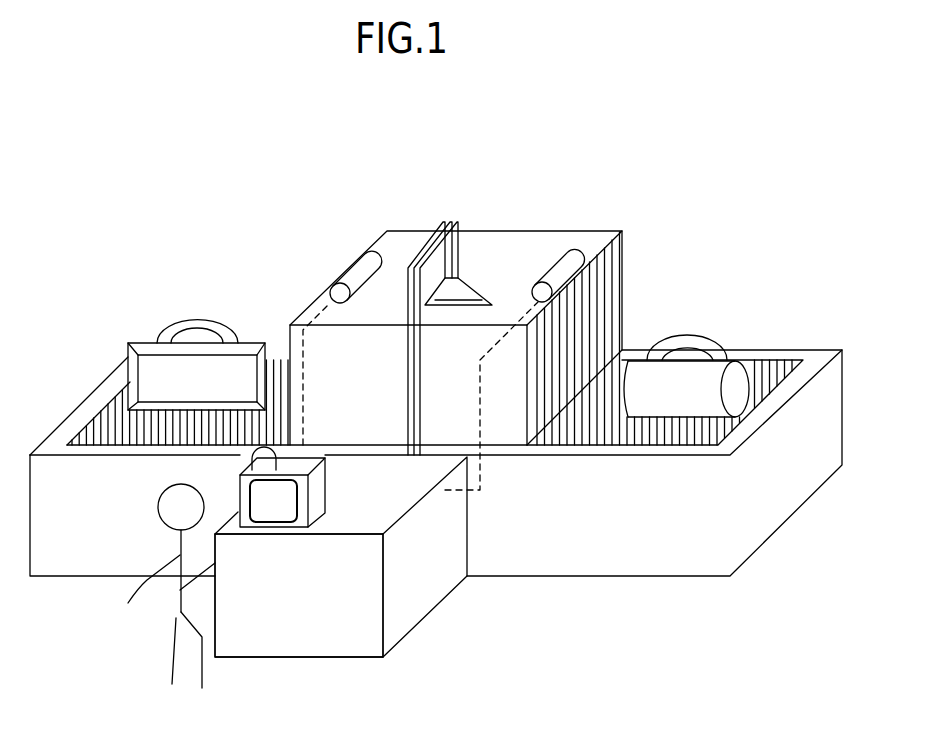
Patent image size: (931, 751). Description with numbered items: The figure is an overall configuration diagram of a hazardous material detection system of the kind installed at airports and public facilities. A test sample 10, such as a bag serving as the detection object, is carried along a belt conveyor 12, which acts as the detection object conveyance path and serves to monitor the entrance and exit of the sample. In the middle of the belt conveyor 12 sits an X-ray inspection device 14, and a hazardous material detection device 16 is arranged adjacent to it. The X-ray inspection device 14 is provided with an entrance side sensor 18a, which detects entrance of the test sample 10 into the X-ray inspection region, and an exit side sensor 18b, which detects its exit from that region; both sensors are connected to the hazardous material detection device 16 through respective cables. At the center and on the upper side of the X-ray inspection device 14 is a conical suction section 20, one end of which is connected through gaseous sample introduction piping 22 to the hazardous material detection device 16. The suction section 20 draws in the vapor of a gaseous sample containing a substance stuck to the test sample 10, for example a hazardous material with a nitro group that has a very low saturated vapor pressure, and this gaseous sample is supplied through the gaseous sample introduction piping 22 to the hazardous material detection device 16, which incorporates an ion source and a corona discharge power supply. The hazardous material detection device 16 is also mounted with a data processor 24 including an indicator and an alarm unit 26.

The test sample 10 is at (157, 367).
The belt conveyor 12 is at (111, 440).
The X-ray inspection device 14 is at (606, 231).
The hazardous material detection device 16 is at (398, 627).
The entrance side sensor 18a is at (358, 271).
The exit side sensor 18b is at (573, 257).
The suction section 20 is at (478, 287).
The gaseous sample introduction piping 22 is at (448, 222).
The data processor 24 is at (272, 530).
The alarm unit 26 is at (267, 463).